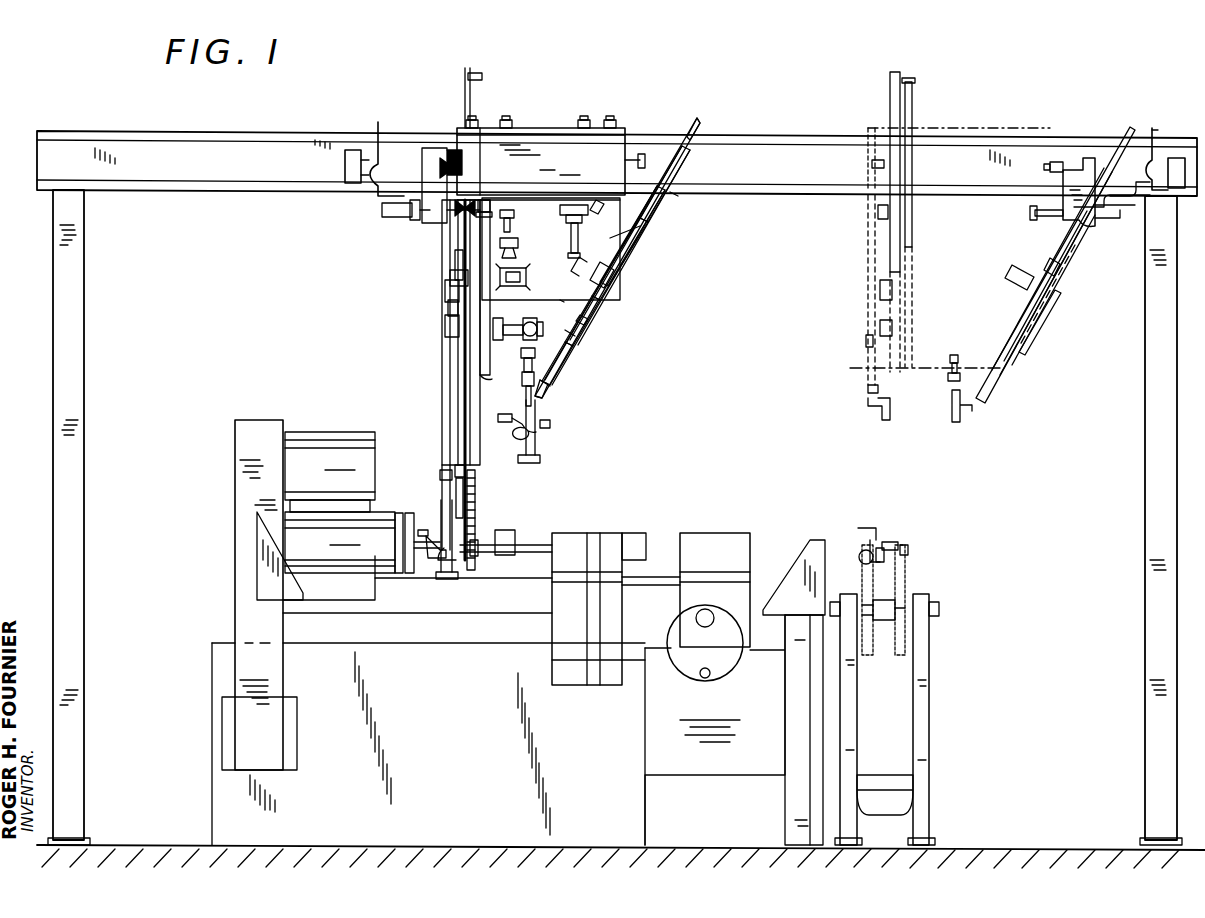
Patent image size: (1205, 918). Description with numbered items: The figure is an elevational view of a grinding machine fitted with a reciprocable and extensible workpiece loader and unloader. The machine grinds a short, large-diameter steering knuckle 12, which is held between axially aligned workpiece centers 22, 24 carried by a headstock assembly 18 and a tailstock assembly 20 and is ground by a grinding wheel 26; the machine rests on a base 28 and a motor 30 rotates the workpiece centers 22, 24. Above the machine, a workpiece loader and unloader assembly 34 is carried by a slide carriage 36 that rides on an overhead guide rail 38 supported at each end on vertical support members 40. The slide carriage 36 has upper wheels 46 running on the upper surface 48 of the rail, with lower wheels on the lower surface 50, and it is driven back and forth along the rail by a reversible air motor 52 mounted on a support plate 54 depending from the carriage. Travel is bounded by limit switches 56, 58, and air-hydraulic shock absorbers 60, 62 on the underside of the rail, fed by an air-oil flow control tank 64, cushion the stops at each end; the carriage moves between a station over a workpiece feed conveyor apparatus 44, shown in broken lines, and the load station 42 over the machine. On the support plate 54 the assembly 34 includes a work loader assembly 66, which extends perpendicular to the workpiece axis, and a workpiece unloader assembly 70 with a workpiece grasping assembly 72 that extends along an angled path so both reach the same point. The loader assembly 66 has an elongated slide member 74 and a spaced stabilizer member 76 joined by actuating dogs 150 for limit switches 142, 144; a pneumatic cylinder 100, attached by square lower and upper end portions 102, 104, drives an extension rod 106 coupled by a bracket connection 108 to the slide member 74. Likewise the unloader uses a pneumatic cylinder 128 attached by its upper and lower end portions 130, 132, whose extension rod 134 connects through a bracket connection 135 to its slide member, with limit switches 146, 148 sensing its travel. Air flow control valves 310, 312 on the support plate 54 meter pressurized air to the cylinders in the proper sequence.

The steering knuckle 12 is at (522, 434).
The headstock assembly 18 is at (414, 514).
The tailstock assembly 20 is at (510, 528).
The workpiece center 22 is at (424, 534).
The workpiece center 24 is at (490, 540).
The grinding wheel 26 is at (475, 494).
The base 28 is at (219, 640).
The motor 30 is at (347, 431).
The workpiece loader and unloader assembly 34 is at (294, 302).
The slide carriage 36 is at (543, 128).
The overhead guide rail 38 is at (298, 130).
The vertical support members 40 is at (86, 432).
The load station 42 is at (470, 456).
The workpiece feed conveyor apparatus 44 is at (928, 600).
The upper wheels 46 is at (472, 122).
The upper surface 48 is at (820, 132).
The lower surface 50 is at (818, 204).
The reversible air motor 52 is at (585, 220).
The support plate 54 is at (505, 220).
The limit switch 56 is at (454, 153).
The limit switch 58 is at (1063, 162).
The air-hydraulic shock absorber 60 is at (412, 222).
The air-hydraulic shock absorber 62 is at (1108, 226).
The air-oil flow control tank 64 is at (353, 146).
The work loader assembly 66 is at (409, 321).
The workpiece unloader assembly 70 is at (611, 338).
The workpiece grasping assembly 72 is at (516, 408).
The slide member 74 is at (446, 438).
The stabilizer member 76 is at (440, 380).
The pneumatic cylinder 100 is at (482, 364).
The lower end portion 102 is at (520, 396).
The upper end portion 104 is at (500, 248).
The extension rod 106 is at (490, 204).
The bracket connection 108 is at (470, 202).
The pneumatic cylinder 128 is at (576, 350).
The upper end portion 130 is at (622, 266).
The lower end portion 132 is at (542, 398).
The extension rod 134 is at (666, 208).
The bracket connection 135 is at (702, 122).
The limit switch 142 is at (442, 347).
The limit switch 144 is at (447, 284).
The limit switch 146 is at (566, 371).
The limit switch 148 is at (606, 286).
The actuating dog 150 is at (450, 266).
The air flow control valve 310 is at (513, 322).
The air flow control valve 312 is at (525, 260).